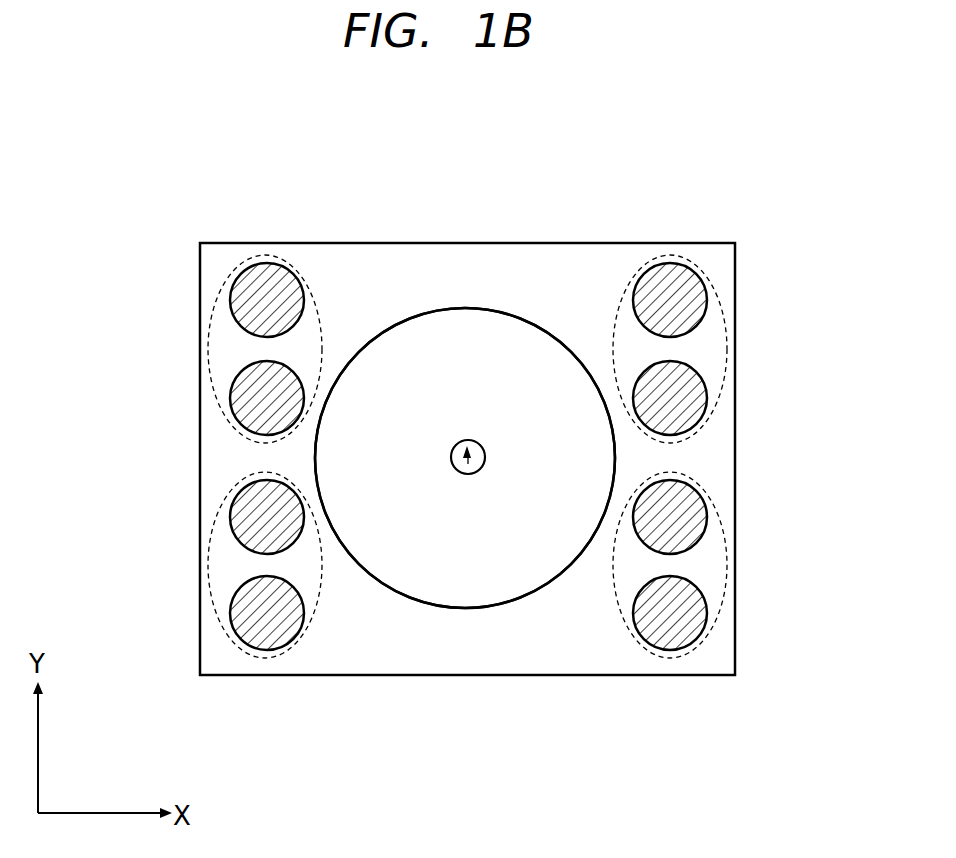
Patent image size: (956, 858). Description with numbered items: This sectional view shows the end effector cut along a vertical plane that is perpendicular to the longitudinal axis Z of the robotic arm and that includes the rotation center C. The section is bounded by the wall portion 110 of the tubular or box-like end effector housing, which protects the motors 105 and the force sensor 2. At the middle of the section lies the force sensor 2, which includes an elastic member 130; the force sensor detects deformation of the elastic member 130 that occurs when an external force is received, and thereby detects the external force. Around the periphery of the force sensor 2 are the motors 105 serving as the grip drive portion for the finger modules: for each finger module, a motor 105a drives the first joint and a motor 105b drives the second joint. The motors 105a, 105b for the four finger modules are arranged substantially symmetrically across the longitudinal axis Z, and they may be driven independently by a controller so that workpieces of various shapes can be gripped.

The wall portion 110 is at (378, 227).
The elastic member 130 is at (495, 296).
The force sensor 2 is at (518, 354).
The motors 105 is at (222, 345).
The motor for driving the first joint 105a is at (247, 418).
The motor for driving the second joint 105b is at (245, 306).
The rotation center C is at (470, 464).
The longitudinal axis Z is at (452, 467).